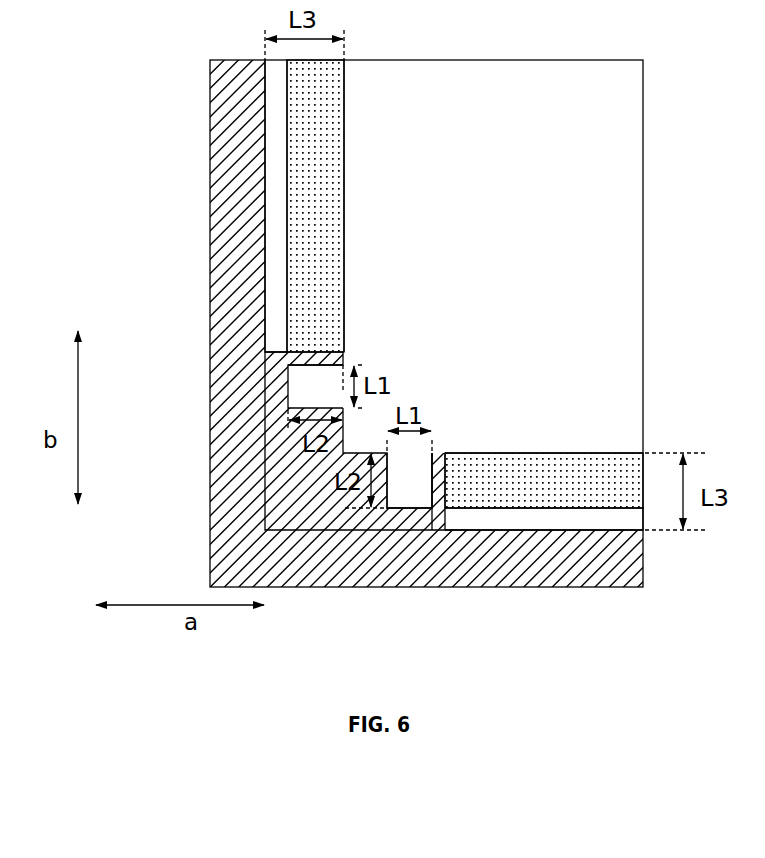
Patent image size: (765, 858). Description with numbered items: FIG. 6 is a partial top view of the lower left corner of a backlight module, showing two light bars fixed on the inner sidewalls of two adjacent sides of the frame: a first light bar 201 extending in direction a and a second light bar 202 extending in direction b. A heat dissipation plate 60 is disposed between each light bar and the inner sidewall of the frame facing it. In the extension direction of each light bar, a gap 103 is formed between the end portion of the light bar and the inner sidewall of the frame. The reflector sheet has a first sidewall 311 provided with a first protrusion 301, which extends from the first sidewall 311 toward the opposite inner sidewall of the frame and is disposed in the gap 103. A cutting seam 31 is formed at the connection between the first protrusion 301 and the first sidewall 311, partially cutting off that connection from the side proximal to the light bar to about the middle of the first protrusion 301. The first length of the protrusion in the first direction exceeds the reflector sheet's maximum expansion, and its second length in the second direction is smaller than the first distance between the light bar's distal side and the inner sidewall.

The gap 103 is at (290, 470).
The cutting seam 31 is at (340, 376).
The first protrusion 301 is at (316, 399).
The heat dissipation plate 60 is at (277, 184).
The second light bar 202 is at (317, 227).
The first light bar 201 is at (603, 476).
The first sidewall 311 is at (342, 144).